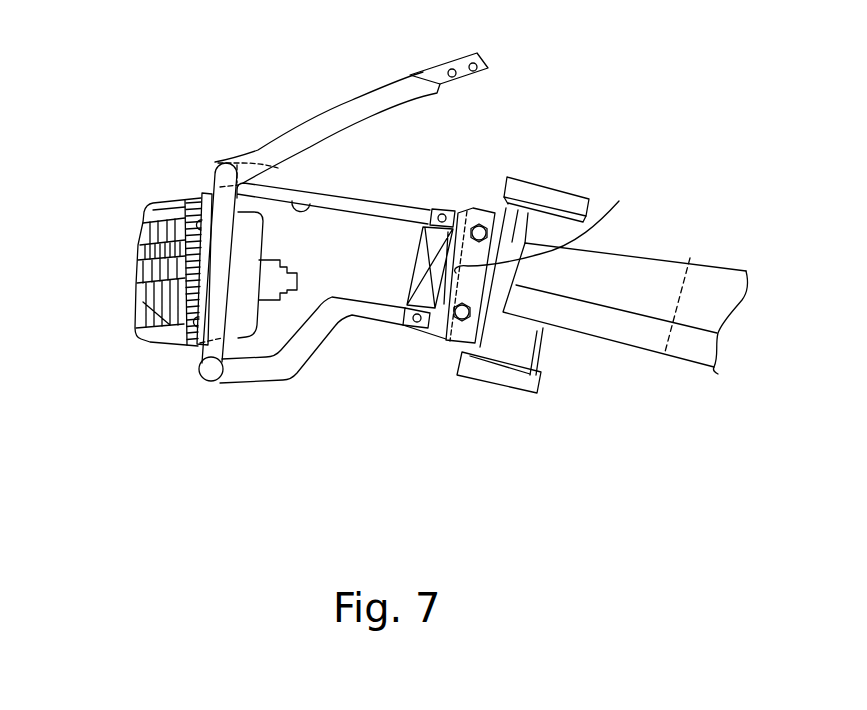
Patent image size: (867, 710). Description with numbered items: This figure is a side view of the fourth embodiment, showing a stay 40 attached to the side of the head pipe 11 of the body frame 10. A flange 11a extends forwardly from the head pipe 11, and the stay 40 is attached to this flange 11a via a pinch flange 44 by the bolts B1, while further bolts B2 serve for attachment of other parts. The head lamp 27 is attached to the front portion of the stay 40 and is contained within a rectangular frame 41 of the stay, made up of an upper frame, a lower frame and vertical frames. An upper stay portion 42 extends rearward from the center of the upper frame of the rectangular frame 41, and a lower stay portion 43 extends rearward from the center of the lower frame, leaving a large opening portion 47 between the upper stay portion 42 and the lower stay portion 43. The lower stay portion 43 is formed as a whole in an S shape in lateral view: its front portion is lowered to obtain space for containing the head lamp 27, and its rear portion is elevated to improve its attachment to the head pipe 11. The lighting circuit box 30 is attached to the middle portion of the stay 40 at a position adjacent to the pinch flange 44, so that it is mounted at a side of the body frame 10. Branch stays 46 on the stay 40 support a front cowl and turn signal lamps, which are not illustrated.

The body frame 10 is at (646, 355).
The head pipe 11 is at (507, 388).
The flange 11a is at (485, 205).
The head lamp 27 is at (150, 210).
The lighting circuit box 30 is at (410, 262).
The stay 40 is at (282, 252).
The rectangular frame 41 is at (196, 357).
The upper stay portion 42 is at (381, 192).
The lower stay portion 43 is at (355, 318).
The pinch flange 44 is at (619, 201).
The branch stays 46 is at (364, 94).
The large opening portion 47 is at (296, 195).
The bolts B1 is at (457, 348).
The bolts B2 is at (443, 208).